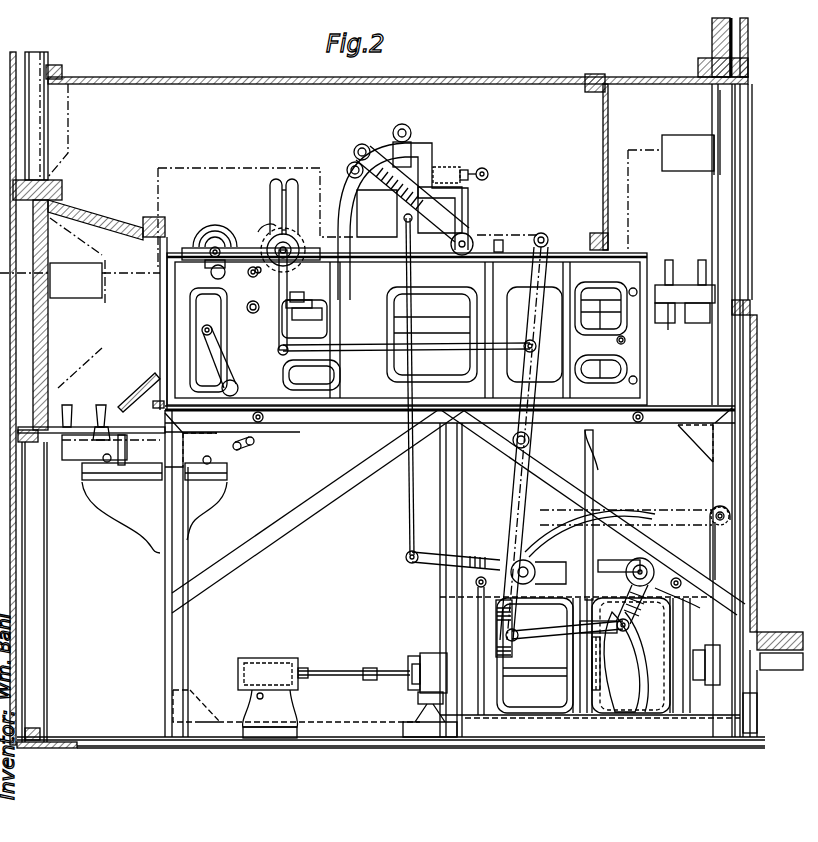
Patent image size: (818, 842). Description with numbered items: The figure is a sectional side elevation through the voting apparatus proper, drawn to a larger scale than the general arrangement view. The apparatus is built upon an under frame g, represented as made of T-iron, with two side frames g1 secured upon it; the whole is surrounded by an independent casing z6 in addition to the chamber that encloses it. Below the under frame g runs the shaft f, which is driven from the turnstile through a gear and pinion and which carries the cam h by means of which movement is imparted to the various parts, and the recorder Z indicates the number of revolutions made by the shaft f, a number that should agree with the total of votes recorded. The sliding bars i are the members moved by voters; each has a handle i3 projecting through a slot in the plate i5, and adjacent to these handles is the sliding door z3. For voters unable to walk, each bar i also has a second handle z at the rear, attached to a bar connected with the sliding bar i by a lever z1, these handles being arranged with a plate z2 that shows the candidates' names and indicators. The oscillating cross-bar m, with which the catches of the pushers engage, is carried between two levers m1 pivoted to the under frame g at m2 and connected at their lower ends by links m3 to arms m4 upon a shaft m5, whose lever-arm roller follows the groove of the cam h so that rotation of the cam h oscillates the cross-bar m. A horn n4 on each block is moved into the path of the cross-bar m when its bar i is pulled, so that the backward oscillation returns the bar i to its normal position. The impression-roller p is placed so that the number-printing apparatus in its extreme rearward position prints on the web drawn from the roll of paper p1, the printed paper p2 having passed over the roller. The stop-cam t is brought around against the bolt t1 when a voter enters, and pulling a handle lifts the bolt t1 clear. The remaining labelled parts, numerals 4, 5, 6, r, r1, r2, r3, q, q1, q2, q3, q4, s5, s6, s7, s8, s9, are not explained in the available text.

The guide columns 6 is at (62, 590).
The independent casing z6 is at (220, 76).
The sliding door z3 is at (714, 42).
The right guide 5 is at (752, 150).
The spring rod r is at (455, 224).
The rollers r1 is at (352, 150).
The upper pivot r2 is at (412, 146).
The adjusting block r3 is at (455, 166).
The horn n4 is at (500, 240).
The oscillating cross-bar m is at (544, 236).
The lever m1 is at (512, 496).
The pivot m2 is at (530, 441).
The link m3 is at (556, 630).
The arm m4 is at (630, 566).
The shaft m5 is at (685, 602).
The impression-roller p is at (298, 234).
The roll of paper p1 is at (216, 232).
The printed paper p2 is at (294, 208).
The lever arm q is at (279, 326).
The connecting rod q1 is at (366, 352).
The pawl q2 is at (256, 230).
The pin q3 is at (248, 294).
The roller q4 is at (220, 278).
The under frame g is at (188, 532).
The side frame g1 is at (499, 275).
The sliding bar i is at (434, 332).
The handle i3 is at (704, 286).
The plate i5 is at (690, 322).
The column 4 is at (34, 318).
The second handle z is at (75, 405).
The lever z1 is at (256, 444).
The plate z2 is at (139, 386).
The pivot s5 is at (536, 562).
The link s6 is at (430, 562).
The vertical rod s7 is at (406, 503).
The pivot pin s8 is at (674, 522).
The arm s9 is at (708, 530).
The stop-cam t is at (592, 660).
The bolt t1 is at (593, 470).
The shaft f is at (530, 668).
The cam h is at (632, 657).
The recorder Z is at (262, 662).